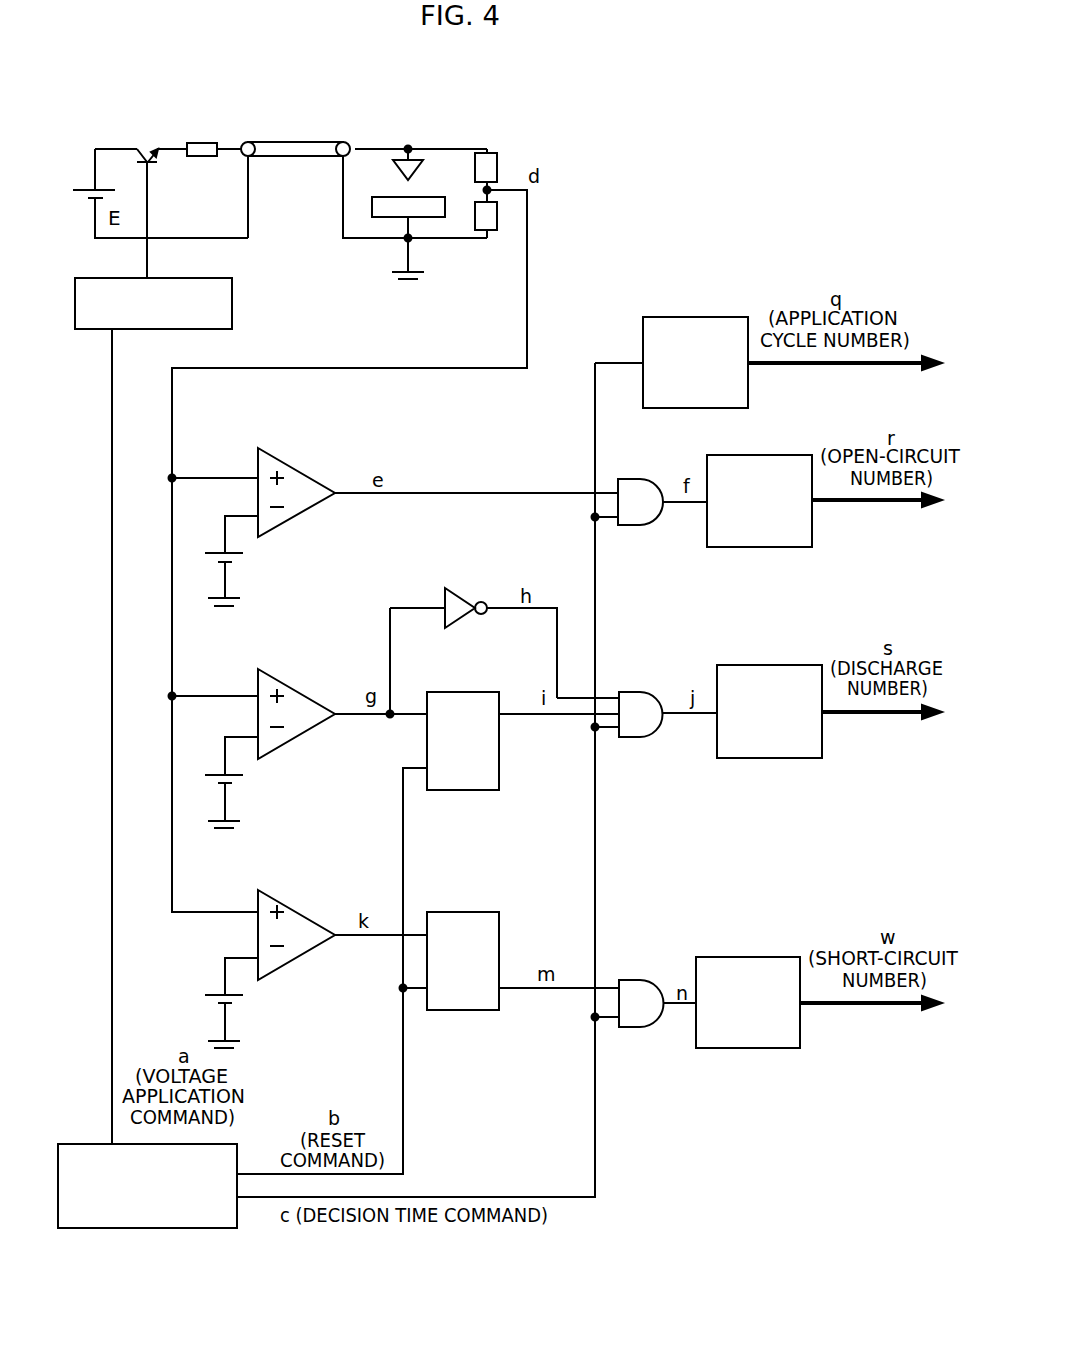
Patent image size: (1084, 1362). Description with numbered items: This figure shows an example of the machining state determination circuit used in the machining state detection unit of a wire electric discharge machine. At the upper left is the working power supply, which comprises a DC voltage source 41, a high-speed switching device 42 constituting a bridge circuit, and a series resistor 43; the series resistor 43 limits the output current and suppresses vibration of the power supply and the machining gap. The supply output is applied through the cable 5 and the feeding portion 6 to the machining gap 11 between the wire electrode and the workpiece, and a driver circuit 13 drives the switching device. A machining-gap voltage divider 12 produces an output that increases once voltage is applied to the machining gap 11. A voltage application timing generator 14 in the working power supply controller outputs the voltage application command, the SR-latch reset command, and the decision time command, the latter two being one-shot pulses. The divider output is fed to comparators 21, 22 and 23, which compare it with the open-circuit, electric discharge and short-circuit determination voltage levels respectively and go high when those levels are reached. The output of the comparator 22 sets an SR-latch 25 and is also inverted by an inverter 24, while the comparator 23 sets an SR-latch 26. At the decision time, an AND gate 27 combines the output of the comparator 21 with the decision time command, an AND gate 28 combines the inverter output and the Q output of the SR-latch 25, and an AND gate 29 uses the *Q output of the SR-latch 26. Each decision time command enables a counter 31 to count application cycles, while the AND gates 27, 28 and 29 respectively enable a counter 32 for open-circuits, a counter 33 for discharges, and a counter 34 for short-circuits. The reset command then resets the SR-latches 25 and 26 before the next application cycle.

The DC voltage source 41 is at (86, 183).
The high-speed switching device 42 is at (141, 148).
The series resistor 43 is at (201, 143).
The cable 5 is at (290, 143).
The feeding portion 6 is at (423, 160).
The machining gap 11 is at (397, 187).
The machining-gap voltage divider 12 is at (467, 228).
The driver circuit 13 is at (232, 308).
The voltage application timing generator 14 is at (76, 1144).
The comparator 21 is at (284, 511).
The comparator 22 is at (284, 736).
The comparator 23 is at (284, 956).
The inverter 24 is at (454, 588).
The SR-latch 25 is at (474, 727).
The SR-latch 26 is at (479, 946).
The AND gate 27 is at (657, 479).
The AND gate 28 is at (659, 690).
The AND gate 29 is at (649, 980).
The counter 31 is at (792, 362).
The counter 32 is at (824, 501).
The counter 33 is at (829, 711).
The counter 34 is at (819, 1002).